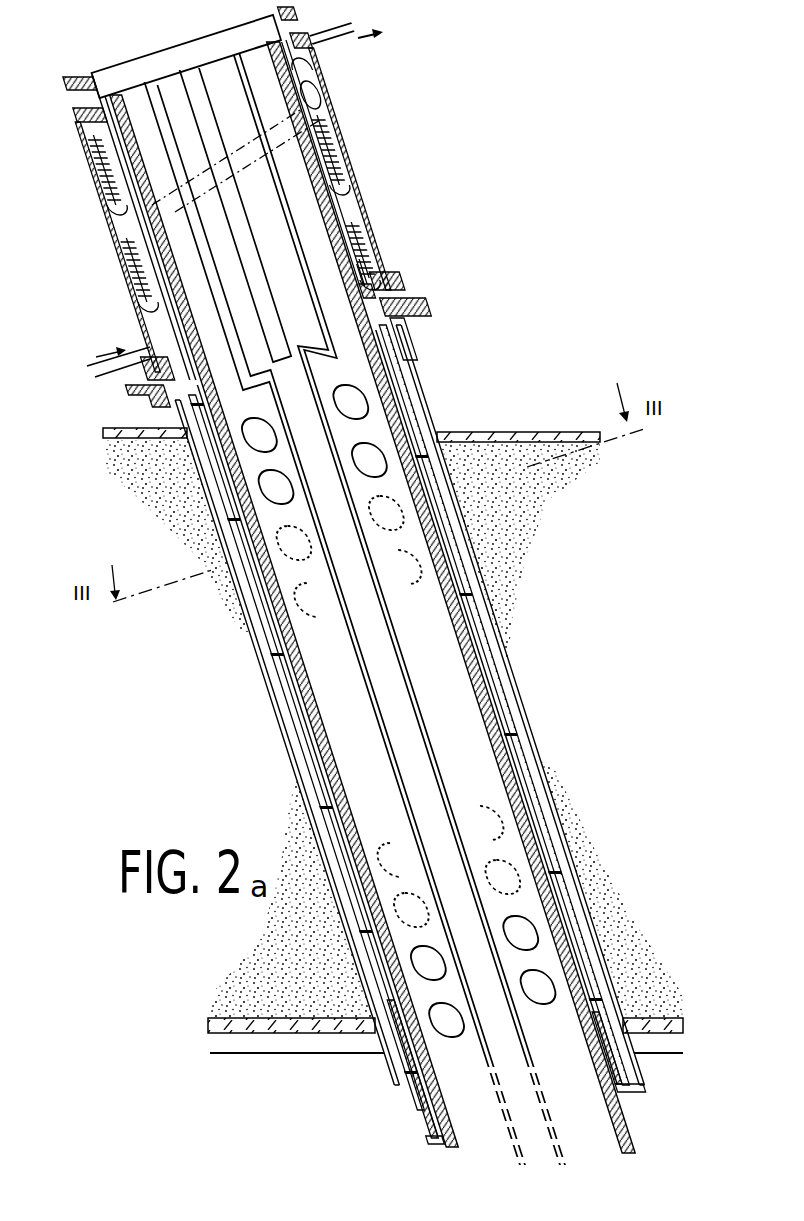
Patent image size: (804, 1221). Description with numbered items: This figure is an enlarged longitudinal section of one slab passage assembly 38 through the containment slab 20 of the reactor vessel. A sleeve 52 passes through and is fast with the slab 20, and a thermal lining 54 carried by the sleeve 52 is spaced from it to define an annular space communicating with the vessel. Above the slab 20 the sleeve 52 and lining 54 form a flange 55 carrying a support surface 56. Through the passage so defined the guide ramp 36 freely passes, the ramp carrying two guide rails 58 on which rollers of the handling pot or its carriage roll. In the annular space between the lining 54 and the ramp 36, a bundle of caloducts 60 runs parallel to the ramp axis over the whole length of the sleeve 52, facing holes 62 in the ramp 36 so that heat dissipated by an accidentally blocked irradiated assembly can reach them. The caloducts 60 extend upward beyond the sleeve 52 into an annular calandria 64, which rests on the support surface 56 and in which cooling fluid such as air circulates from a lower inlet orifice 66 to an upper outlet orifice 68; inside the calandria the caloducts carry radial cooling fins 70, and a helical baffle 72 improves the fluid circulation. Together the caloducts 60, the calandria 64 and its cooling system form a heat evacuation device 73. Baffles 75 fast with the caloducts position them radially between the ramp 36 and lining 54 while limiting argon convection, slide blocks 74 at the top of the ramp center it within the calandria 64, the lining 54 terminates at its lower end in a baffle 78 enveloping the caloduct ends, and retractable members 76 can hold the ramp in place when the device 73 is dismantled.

The containment slab 20 is at (594, 542).
The guide ramp 36 is at (513, 807).
The slab passage assembly 38 is at (500, 362).
The sleeve 52 is at (255, 648).
The thermal lining 54 is at (292, 722).
The flange 55 is at (413, 312).
The support surface 56 is at (118, 393).
The guide rails 58 is at (410, 727).
The caloducts 60 is at (330, 806).
The holes 62 is at (265, 488).
The annular calandria 64 is at (100, 192).
The lower inlet orifice 66 is at (143, 338).
The upper outlet orifice 68 is at (352, 28).
The radial cooling fins 70 is at (340, 172).
The helical baffle 72 is at (312, 102).
The heat evacuation device 73 is at (420, 205).
The slide blocks 74 is at (113, 95).
The baffles 75 is at (413, 362).
The retractable members 76 is at (388, 283).
The baffle 78 is at (430, 1140).